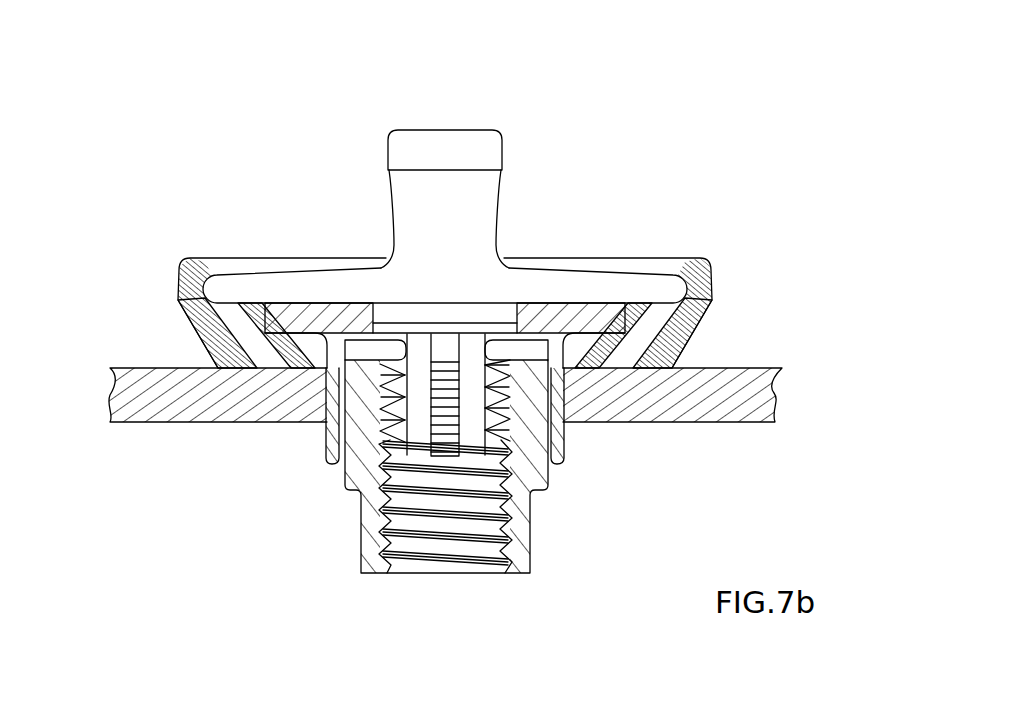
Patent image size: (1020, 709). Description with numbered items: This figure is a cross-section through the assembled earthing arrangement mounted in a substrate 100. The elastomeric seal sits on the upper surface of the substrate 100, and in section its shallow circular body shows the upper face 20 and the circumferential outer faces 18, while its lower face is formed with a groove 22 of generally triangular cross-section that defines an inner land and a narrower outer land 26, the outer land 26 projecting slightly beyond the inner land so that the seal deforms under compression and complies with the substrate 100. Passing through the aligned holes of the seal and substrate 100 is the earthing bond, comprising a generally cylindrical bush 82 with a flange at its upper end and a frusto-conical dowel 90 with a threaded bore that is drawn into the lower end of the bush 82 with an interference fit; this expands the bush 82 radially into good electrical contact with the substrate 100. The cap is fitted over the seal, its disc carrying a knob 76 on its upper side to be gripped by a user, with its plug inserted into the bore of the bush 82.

The knob 76 is at (462, 146).
The upper face 20 is at (697, 256).
The circumferential outer faces 18 is at (713, 311).
The outer land 26 is at (228, 368).
The substrate 100 is at (723, 400).
The bush 82 is at (333, 442).
The groove 22 is at (636, 366).
The frusto-conical dowel 90 is at (521, 507).